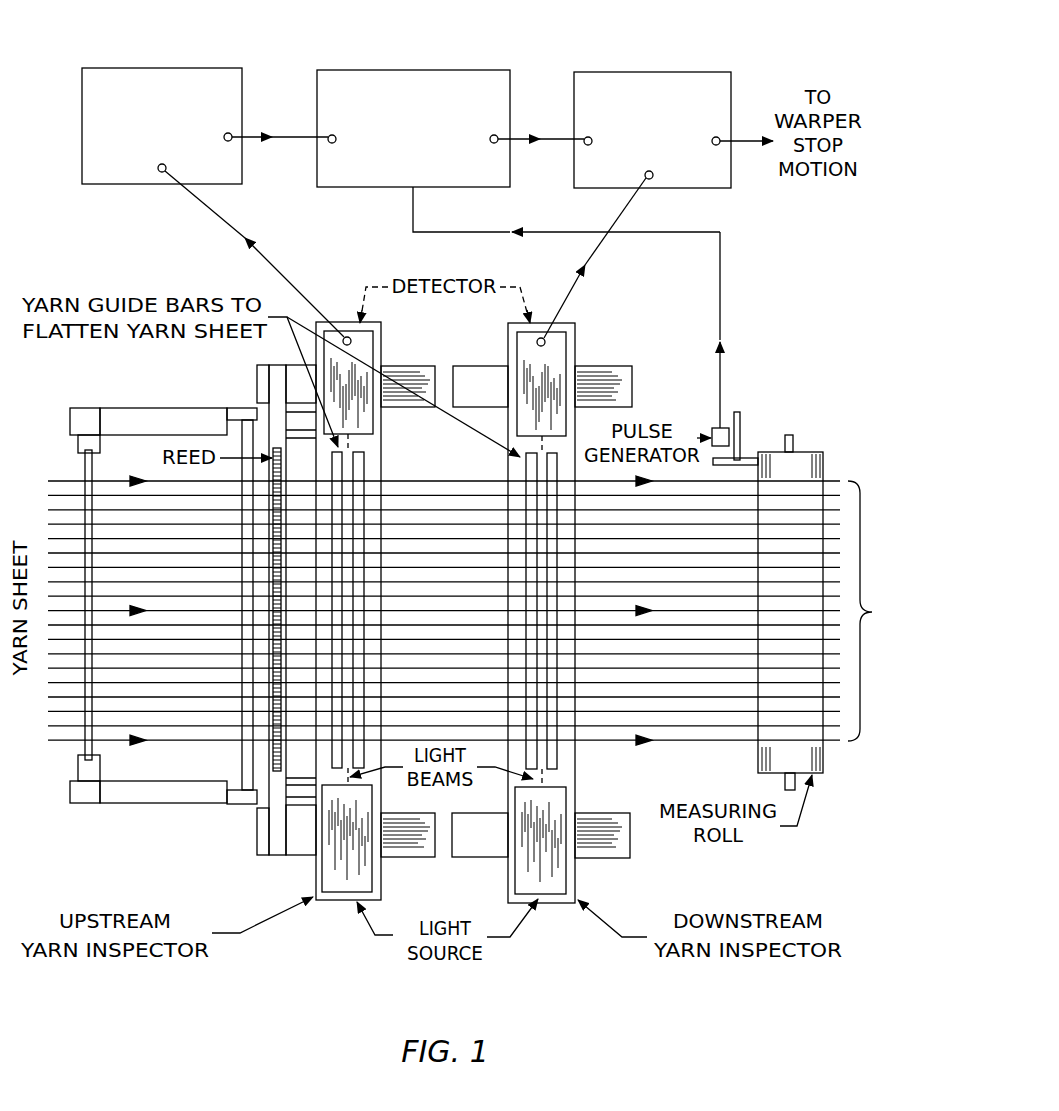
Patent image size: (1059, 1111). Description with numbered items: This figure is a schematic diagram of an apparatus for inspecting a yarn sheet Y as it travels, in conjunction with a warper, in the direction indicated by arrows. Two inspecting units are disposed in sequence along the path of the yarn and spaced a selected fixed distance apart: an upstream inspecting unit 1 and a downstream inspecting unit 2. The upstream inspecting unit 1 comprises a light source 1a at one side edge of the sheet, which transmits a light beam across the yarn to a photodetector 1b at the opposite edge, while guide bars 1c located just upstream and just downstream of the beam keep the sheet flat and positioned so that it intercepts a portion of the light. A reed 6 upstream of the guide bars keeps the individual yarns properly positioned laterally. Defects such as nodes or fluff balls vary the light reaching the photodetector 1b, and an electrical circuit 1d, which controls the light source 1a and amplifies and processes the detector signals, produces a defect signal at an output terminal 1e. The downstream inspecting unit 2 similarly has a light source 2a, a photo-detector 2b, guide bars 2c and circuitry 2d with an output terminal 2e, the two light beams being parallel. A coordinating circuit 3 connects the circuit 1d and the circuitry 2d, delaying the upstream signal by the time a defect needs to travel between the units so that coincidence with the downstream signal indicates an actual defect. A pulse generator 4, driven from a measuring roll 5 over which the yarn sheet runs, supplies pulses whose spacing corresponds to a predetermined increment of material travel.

The upstream inspecting unit 1 is at (338, 903).
The light source 1a is at (332, 867).
The photodetector 1b is at (372, 348).
The guide bars 1c is at (363, 467).
The electrical circuit 1d is at (199, 68).
The output terminal 1e is at (233, 135).
The downstream inspecting unit 2 is at (548, 907).
The light source 2a is at (525, 873).
The photo-detector 2b is at (560, 348).
The guide bars 2c is at (555, 760).
The circuitry 2d is at (688, 72).
The output terminal 2e is at (720, 146).
The coordinating circuit 3 is at (430, 70).
The pulse generator 4 is at (712, 428).
The measuring roll 5 is at (812, 460).
The reed 6 is at (273, 753).
The yarn sheet Y is at (471, 610).